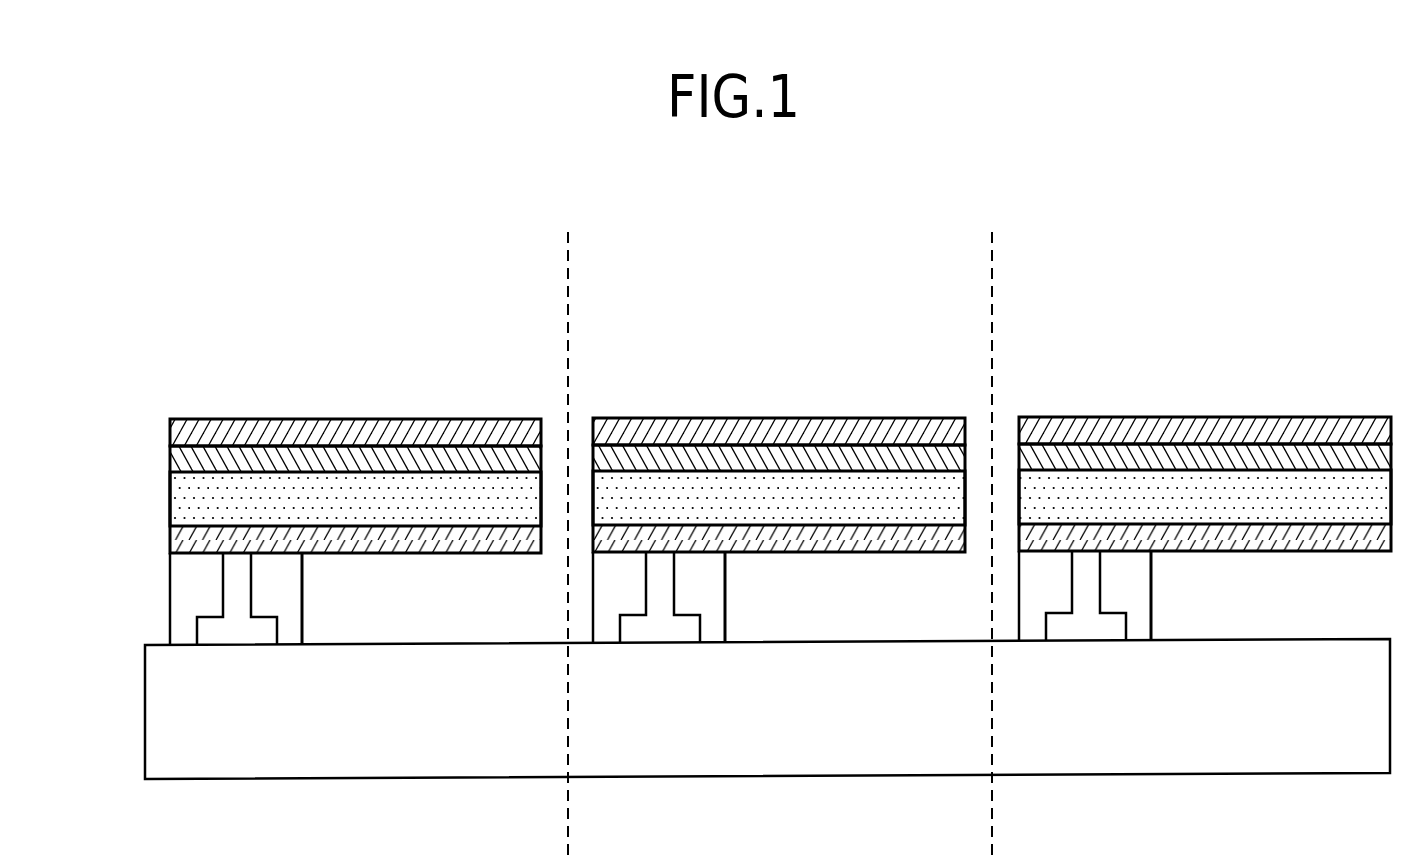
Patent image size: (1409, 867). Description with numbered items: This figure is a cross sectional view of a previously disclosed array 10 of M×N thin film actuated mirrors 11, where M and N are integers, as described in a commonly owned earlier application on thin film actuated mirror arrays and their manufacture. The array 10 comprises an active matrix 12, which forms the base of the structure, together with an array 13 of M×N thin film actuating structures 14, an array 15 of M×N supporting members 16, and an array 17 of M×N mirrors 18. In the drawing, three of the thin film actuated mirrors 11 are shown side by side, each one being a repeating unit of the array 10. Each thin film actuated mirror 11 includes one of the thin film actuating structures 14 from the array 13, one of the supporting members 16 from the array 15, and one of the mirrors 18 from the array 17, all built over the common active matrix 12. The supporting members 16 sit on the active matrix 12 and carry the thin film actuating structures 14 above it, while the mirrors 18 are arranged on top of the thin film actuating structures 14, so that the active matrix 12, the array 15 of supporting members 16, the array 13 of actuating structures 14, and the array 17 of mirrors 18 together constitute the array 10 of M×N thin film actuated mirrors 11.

The array of M×N thin film actuated mirrors 10 is at (1118, 166).
The thin film actuated mirror 11 is at (538, 287).
The active matrix 12 is at (130, 643).
The array of M×N thin film actuating structures 13 is at (146, 450).
The thin film actuating structure 14 is at (296, 498).
The array of M×N supporting members 15 is at (160, 555).
The supporting member 16 is at (285, 584).
The array of M×N mirrors 17 is at (148, 420).
The mirror 18 is at (441, 432).